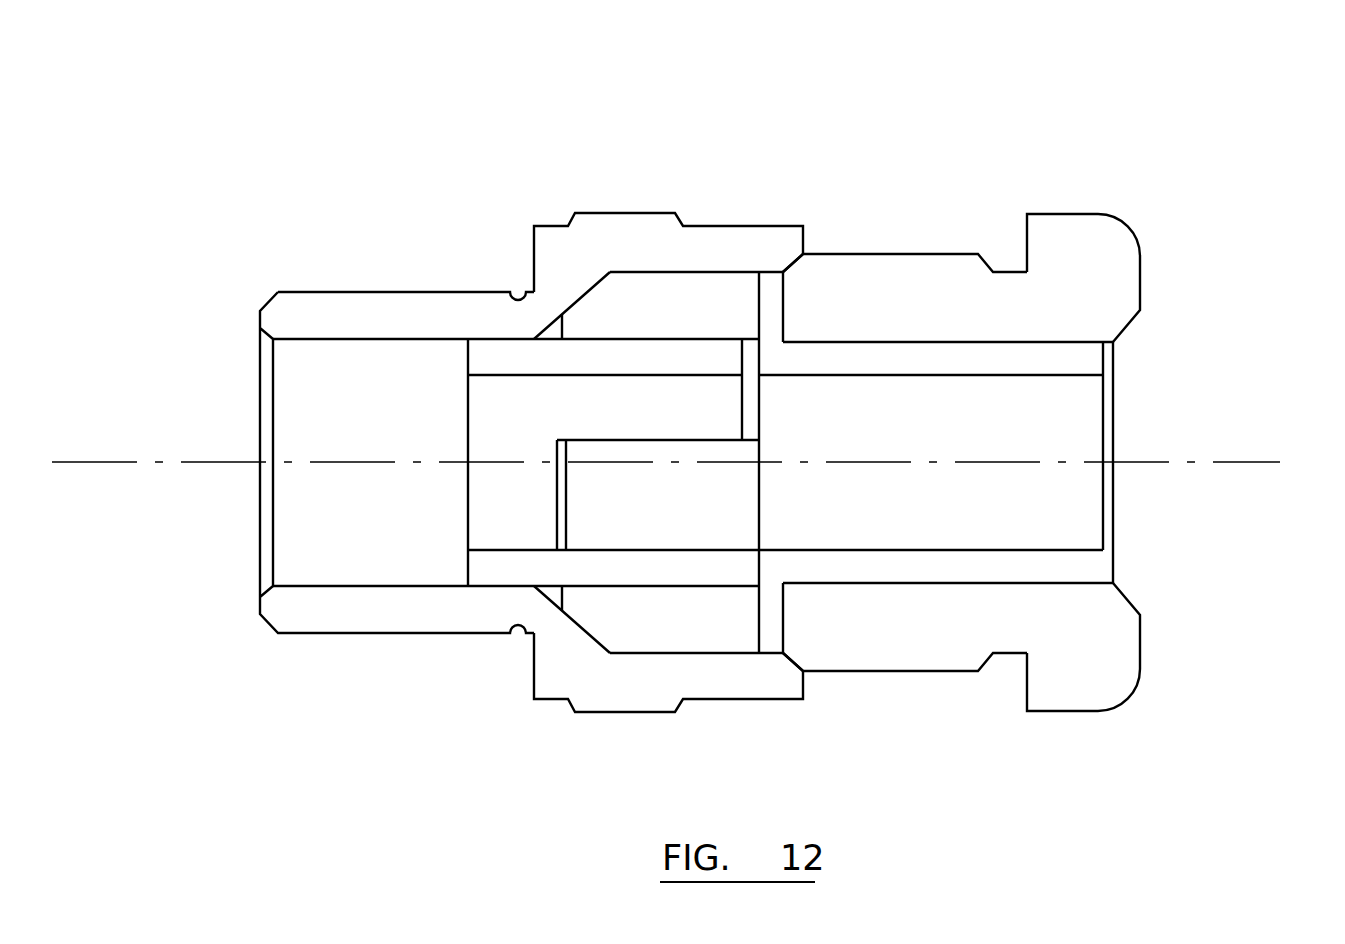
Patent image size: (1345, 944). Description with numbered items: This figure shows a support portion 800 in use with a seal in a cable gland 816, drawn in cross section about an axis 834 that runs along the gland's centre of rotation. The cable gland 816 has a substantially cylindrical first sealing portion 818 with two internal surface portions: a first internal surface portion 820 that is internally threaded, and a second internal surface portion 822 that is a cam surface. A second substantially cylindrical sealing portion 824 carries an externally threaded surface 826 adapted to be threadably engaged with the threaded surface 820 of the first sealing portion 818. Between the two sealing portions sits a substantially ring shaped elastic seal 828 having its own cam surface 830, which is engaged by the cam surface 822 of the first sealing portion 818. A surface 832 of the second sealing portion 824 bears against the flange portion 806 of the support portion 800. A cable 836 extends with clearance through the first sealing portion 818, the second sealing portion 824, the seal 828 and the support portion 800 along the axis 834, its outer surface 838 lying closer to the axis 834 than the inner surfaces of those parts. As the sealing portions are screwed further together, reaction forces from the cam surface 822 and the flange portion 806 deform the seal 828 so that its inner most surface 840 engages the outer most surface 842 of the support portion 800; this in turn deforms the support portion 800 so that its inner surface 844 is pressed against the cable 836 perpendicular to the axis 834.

The support portion 800 is at (502, 570).
The flange portion 806 is at (768, 323).
The cable gland 816 is at (1023, 404).
The first sealing portion 818 is at (645, 225).
The first internal surface portion 820 is at (772, 265).
The second internal surface portion 822 is at (570, 290).
The second sealing portion 824 is at (1100, 268).
The externally threaded surface 826 is at (830, 253).
The seal 828 is at (622, 290).
The cam surface 830 is at (590, 275).
The surface 832 is at (785, 297).
The axis 834 is at (690, 463).
The cable 836 is at (1077, 418).
The outer surface 838 is at (1053, 375).
The inner most surface 840 is at (579, 357).
The outer most surface 842 is at (659, 356).
The inner surface 844 is at (487, 370).